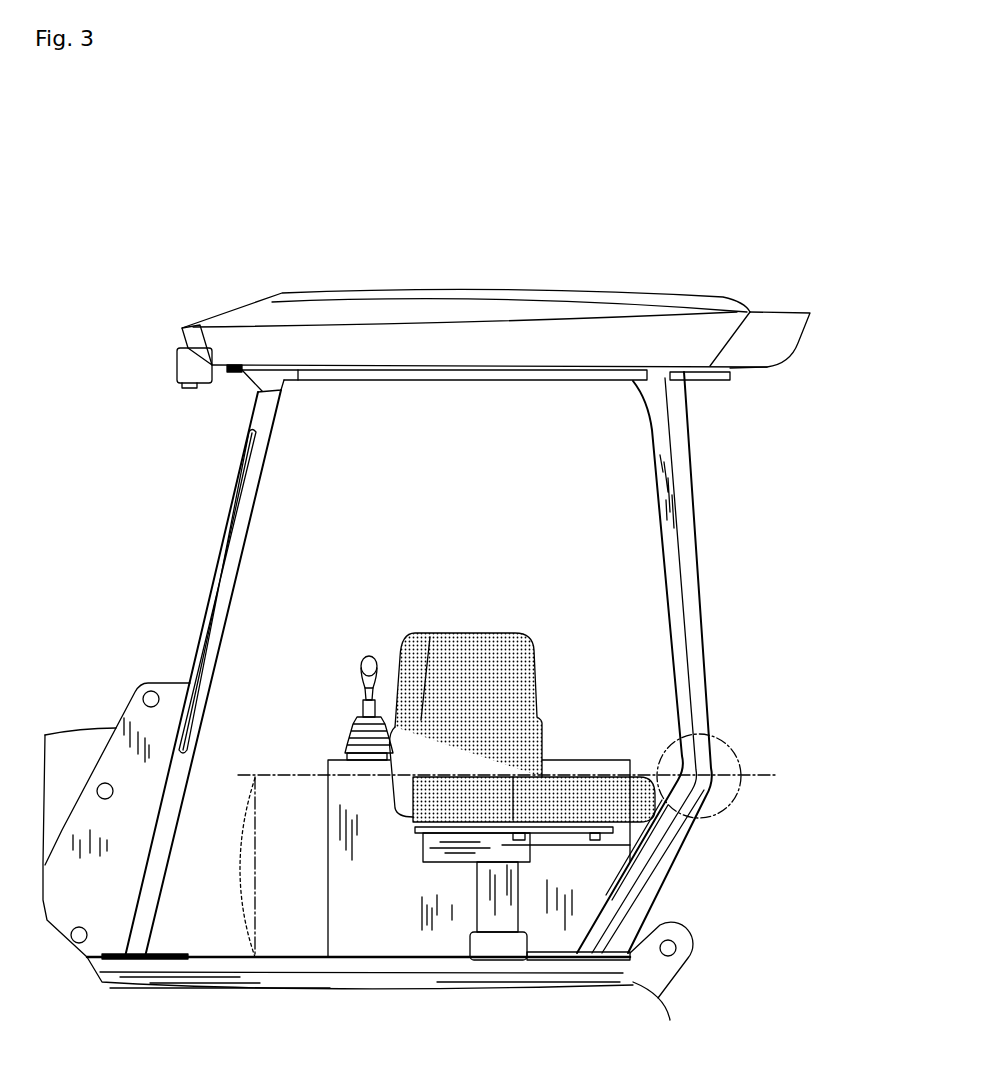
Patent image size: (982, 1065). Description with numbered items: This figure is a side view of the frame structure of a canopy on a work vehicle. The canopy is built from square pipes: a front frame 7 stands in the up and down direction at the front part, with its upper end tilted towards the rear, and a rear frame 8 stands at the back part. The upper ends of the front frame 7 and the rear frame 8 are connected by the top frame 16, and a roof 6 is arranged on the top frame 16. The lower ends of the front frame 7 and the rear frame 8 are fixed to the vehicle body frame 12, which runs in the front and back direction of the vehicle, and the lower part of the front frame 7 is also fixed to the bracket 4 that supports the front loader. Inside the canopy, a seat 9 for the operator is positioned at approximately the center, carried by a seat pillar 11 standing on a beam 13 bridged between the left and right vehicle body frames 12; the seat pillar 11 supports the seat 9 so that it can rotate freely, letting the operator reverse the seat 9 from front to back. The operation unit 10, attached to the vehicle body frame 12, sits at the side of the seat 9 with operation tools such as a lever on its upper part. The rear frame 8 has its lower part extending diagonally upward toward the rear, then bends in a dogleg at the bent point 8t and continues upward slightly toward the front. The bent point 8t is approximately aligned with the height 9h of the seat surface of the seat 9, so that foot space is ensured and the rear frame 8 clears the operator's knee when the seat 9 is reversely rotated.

The bracket 4 is at (142, 823).
The roof 6 is at (391, 315).
The front frame 7 is at (245, 466).
The rear frame 8 is at (660, 455).
The bent point 8t is at (680, 738).
The seat 9 is at (482, 702).
The height of the seat surface 9h is at (246, 802).
The operation unit 10 is at (360, 885).
The seat pillar 11 is at (497, 898).
The vehicle body frame 12 is at (445, 982).
The beam 13 is at (470, 948).
The top frame 16 is at (420, 376).